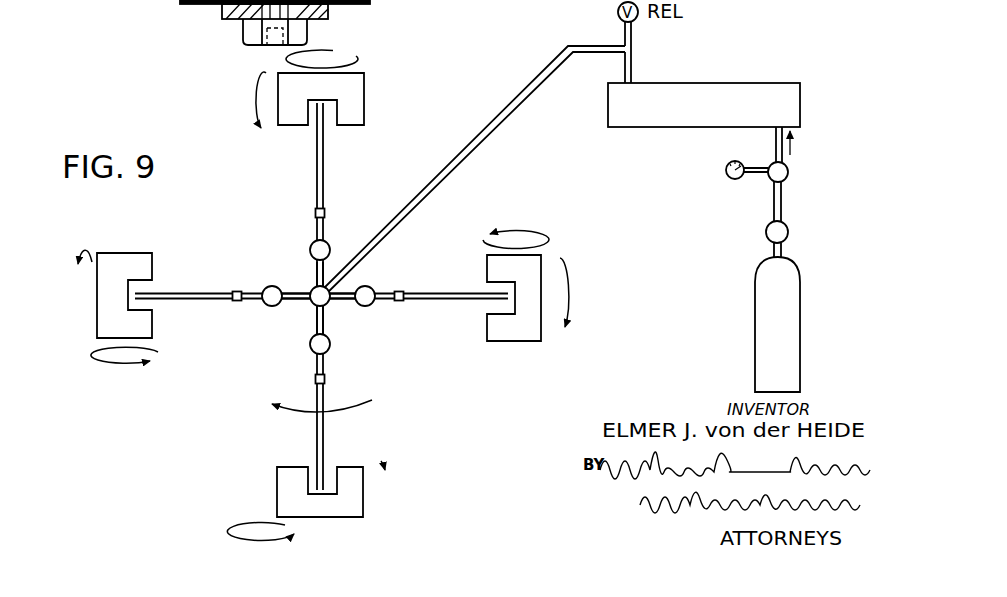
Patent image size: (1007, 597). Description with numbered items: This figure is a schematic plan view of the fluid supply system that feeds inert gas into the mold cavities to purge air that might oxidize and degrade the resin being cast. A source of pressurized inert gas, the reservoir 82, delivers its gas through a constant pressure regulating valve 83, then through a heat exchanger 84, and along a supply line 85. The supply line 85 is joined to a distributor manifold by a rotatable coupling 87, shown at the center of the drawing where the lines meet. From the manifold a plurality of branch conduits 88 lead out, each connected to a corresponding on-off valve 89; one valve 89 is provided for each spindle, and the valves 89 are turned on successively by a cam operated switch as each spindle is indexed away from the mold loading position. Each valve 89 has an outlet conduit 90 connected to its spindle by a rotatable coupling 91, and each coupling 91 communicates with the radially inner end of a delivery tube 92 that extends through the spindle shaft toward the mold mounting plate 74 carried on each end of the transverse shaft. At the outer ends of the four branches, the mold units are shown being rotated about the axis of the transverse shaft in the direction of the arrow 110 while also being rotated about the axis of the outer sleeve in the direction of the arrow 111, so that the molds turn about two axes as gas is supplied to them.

The mold mounting plate 74 is at (164, 0).
The reservoir 82 is at (755, 324).
The constant pressure regulating valve 83 is at (770, 181).
The heat exchanger 84 is at (640, 127).
The supply line 85 is at (485, 138).
The rotatable coupling 87 is at (311, 301).
The branch conduits 88 is at (314, 289).
The on-off valves 89 is at (310, 248).
The outlet conduit 90 is at (323, 226).
The rotatable coupling 91 is at (311, 213).
The delivery tube 92 is at (325, 163).
The arrow 110 is at (268, 131).
The arrow 111 is at (345, 52).